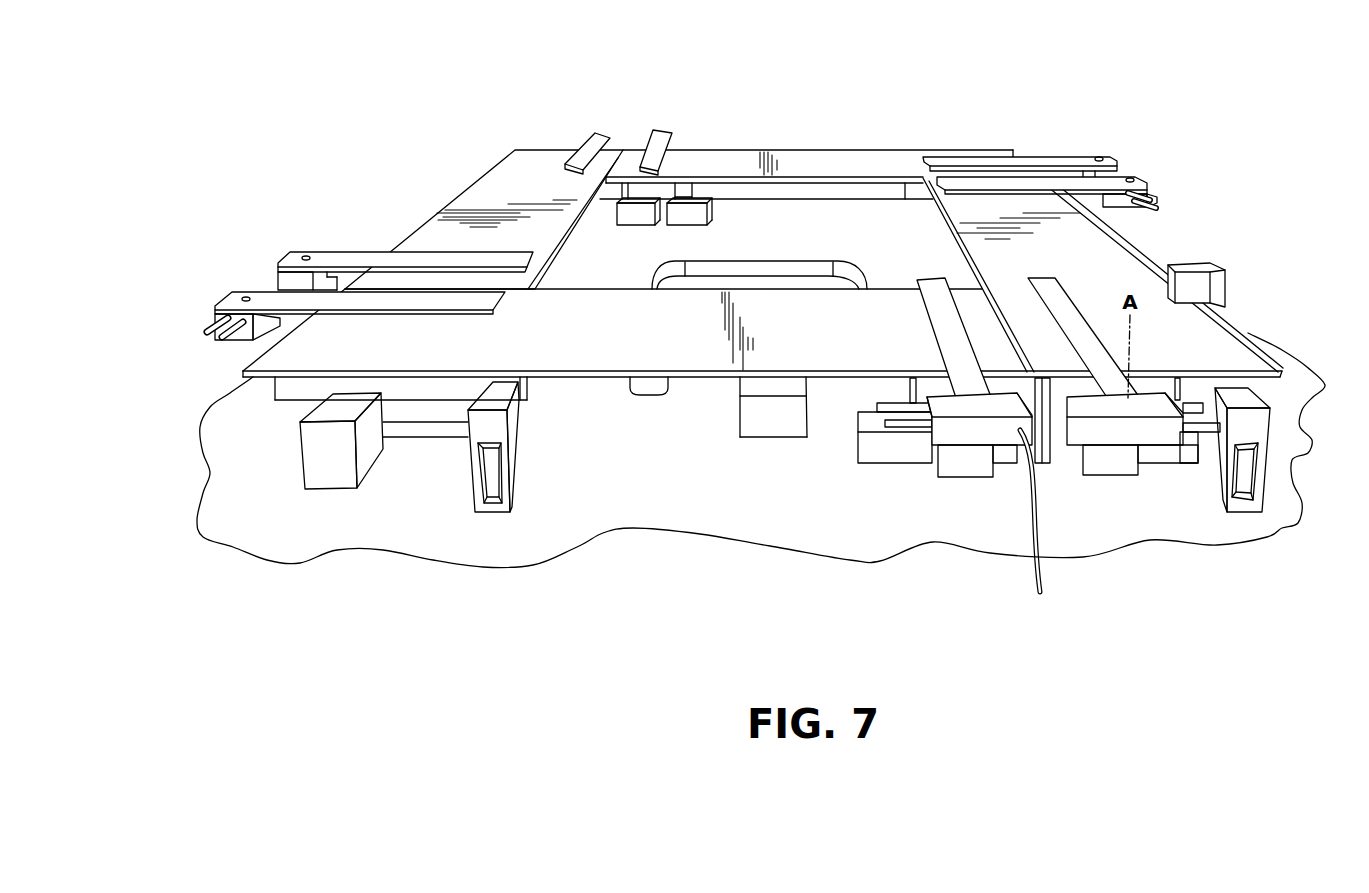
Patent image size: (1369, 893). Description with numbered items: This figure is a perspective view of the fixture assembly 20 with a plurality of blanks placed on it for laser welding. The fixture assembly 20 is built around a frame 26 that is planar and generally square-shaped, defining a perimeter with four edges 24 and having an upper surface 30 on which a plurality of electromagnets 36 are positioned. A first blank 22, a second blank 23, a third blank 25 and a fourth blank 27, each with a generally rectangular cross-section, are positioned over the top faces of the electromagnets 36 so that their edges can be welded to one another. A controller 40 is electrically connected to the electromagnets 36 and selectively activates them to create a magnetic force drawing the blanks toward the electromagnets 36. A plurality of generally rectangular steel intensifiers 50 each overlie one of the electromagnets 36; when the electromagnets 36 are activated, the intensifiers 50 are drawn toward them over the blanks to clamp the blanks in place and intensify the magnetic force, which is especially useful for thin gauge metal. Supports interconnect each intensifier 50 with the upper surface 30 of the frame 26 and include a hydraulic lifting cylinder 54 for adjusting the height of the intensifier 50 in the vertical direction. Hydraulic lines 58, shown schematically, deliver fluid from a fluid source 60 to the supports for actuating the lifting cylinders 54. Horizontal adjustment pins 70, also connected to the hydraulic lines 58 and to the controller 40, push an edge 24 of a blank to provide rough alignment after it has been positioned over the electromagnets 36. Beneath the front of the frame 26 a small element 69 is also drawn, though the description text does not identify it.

The fixture assembly 20 is at (1190, 143).
The first blank 22 is at (487, 178).
The second blank 23 is at (587, 382).
The edge 24 is at (1273, 355).
The third blank 25 is at (1213, 353).
The frame 26 is at (352, 522).
The fourth blank 27 is at (795, 162).
The upper surface 30 is at (223, 523).
The electromagnet 36 is at (942, 383).
The controller 40 is at (245, 333).
The intensifier 50 is at (355, 257).
The hydraulic lifting cylinder 54 is at (982, 437).
The hydraulic line 58 is at (1118, 463).
The fluid source 60 is at (1045, 626).
The knob 69 is at (650, 392).
The horizontal adjustment pin 70 is at (475, 458).